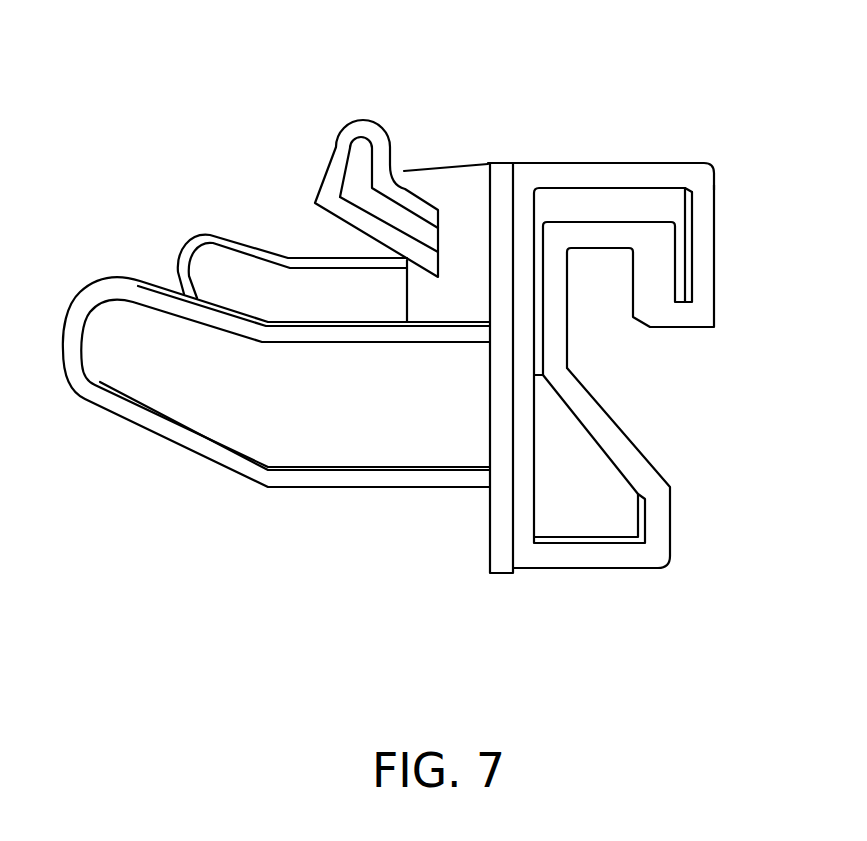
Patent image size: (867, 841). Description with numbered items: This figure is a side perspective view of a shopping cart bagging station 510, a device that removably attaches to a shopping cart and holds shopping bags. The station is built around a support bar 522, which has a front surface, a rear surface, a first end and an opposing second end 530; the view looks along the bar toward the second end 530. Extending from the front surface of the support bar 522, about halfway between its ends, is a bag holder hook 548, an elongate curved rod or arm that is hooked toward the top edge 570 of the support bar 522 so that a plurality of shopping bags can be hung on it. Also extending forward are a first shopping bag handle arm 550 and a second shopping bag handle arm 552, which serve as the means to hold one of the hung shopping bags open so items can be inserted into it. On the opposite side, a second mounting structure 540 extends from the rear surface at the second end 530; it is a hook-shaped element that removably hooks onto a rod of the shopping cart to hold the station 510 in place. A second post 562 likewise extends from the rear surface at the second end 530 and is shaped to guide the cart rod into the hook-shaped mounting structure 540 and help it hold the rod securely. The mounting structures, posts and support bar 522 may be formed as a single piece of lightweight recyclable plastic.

The shopping cart bagging station 510 is at (406, 112).
The support bar 522 is at (469, 182).
The second end 530 is at (503, 597).
The second mounting structure 540 is at (687, 217).
The bag holder hook 548 is at (355, 166).
The first shopping bag handle arm 550 is at (217, 262).
The second shopping bag handle arm 552 is at (263, 437).
The second post 562 is at (633, 518).
The top edge 570 is at (452, 163).